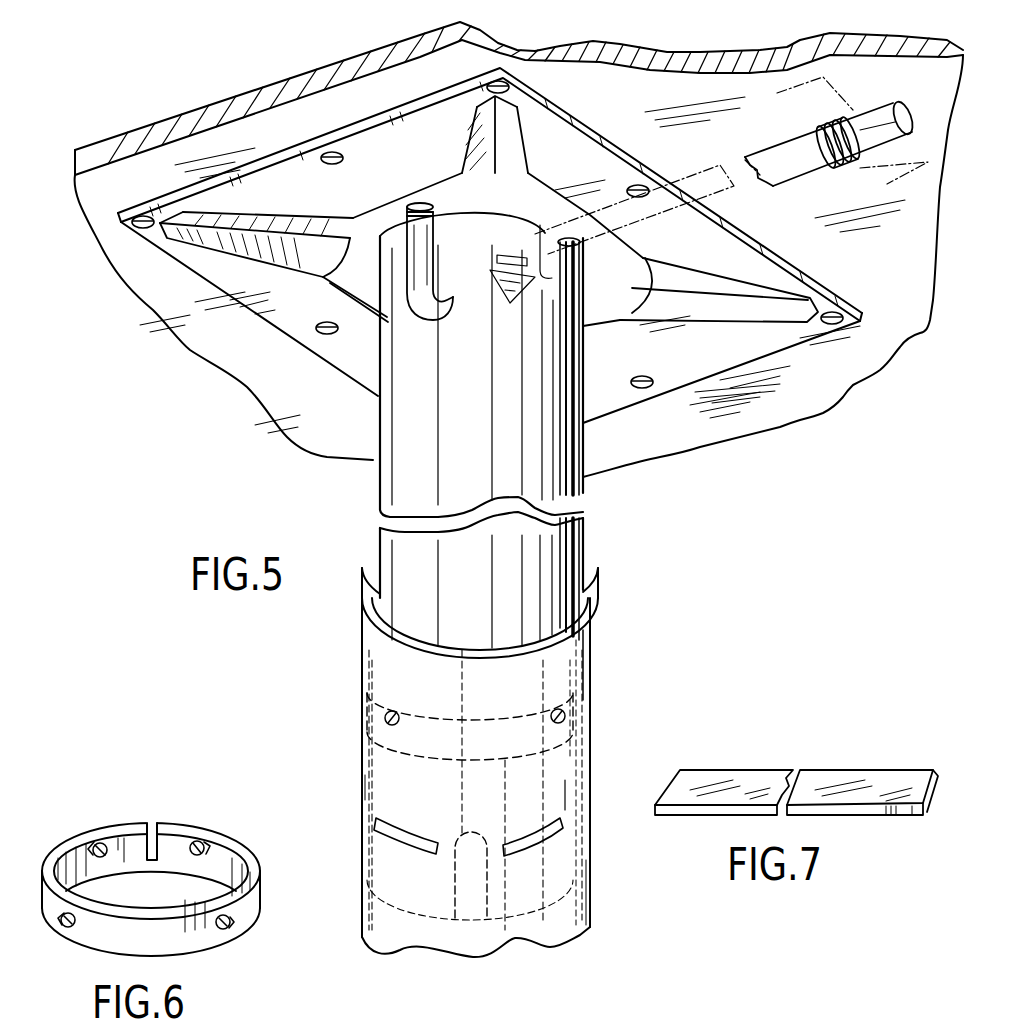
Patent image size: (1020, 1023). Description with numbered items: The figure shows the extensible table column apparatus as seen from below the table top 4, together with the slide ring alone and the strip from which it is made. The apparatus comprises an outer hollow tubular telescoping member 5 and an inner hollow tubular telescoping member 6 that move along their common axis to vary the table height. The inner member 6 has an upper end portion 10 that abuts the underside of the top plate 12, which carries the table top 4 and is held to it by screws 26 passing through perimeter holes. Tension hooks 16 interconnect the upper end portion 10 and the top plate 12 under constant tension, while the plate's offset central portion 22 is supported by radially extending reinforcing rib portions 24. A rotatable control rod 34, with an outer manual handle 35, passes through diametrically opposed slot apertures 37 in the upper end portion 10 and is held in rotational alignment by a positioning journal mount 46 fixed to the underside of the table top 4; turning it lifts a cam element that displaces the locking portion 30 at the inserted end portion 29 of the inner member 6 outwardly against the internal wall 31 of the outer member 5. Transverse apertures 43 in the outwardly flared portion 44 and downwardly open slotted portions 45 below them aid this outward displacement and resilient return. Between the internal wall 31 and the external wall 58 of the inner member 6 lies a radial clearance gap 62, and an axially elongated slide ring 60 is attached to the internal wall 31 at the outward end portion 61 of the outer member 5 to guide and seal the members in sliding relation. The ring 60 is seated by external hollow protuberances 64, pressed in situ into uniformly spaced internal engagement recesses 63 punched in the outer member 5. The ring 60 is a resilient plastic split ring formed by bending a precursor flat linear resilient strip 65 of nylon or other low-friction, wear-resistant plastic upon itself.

In FIG. 5, the table top 4 is at (770, 417).
In FIG. 5, the outer hollow tubular telescoping member 5 is at (592, 678).
In FIG. 5, the inner hollow tubular telescoping member 6 is at (575, 450).
In FIG. 5, the upper end portion 10 is at (560, 303).
In FIG. 5, the top plate 12 is at (762, 248).
In FIG. 5, the tension connection hook 16 is at (392, 312).
In FIG. 5, the offset central portion 22 is at (620, 272).
In FIG. 5, the reinforcing rib portion 24 is at (240, 216).
In FIG. 5, the screws 26 is at (316, 338).
In FIG. 5, the inserted end portion 29 is at (382, 783).
In FIG. 5, the locking portion 30 is at (588, 860).
In FIG. 5, the internal wall 31 is at (590, 632).
In FIG. 5, the control rod 34 is at (677, 187).
In FIG. 5, the manual handle 35 is at (906, 114).
In FIG. 5, the slot aperture 37 is at (547, 228).
In FIG. 5, the transverse apertures 43 is at (393, 835).
In FIG. 5, the outwardly flared portion 44 is at (567, 800).
In FIG. 5, the slotted portions 45 is at (517, 922).
In FIG. 5, the positioning journal mount 46 is at (843, 113).
In FIG. 5, the external wall 58 is at (578, 585).
In FIG. 5, the slide ring 60 is at (460, 727).
In FIG. 6, the slide ring 60 is at (120, 830).
In FIG. 5, the outward end portion 61 is at (590, 617).
In FIG. 5, the clearance gap 62 is at (578, 588).
In FIG. 5, the internal engagement recesses 63 is at (395, 728).
In FIG. 6, the external protuberances 64 is at (203, 852).
In FIG. 7, the precursor flat linear resilient strip 65 is at (838, 780).